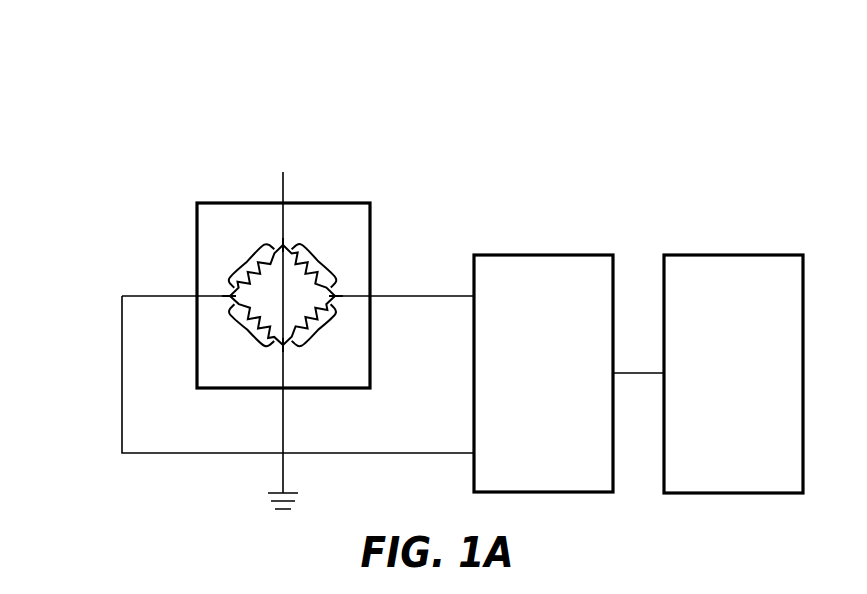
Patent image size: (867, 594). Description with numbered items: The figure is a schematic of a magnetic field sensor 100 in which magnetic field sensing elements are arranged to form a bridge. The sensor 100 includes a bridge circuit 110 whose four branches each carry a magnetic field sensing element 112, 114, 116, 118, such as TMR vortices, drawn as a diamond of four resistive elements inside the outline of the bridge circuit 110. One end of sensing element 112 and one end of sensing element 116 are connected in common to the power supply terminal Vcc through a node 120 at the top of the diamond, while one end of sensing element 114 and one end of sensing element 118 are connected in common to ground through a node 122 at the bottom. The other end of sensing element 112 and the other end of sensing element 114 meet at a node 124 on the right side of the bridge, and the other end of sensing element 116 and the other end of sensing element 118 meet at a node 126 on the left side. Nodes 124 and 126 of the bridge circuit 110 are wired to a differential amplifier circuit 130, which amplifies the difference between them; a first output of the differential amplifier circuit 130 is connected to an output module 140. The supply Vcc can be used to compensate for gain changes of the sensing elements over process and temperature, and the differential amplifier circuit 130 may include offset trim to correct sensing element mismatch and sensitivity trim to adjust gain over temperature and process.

The magnetic field sensor 100 is at (178, 98).
The bridge circuit 110 is at (243, 203).
The magnetic field sensing element 112 is at (335, 240).
The magnetic field sensing element 114 is at (332, 334).
The magnetic field sensing element 116 is at (242, 256).
The magnetic field sensing element 118 is at (240, 336).
The node 120 is at (284, 238).
The node 122 is at (286, 348).
The node 124 is at (337, 294).
The node 126 is at (229, 294).
The differential amplifier circuit 130 is at (523, 429).
The output module 140 is at (715, 430).